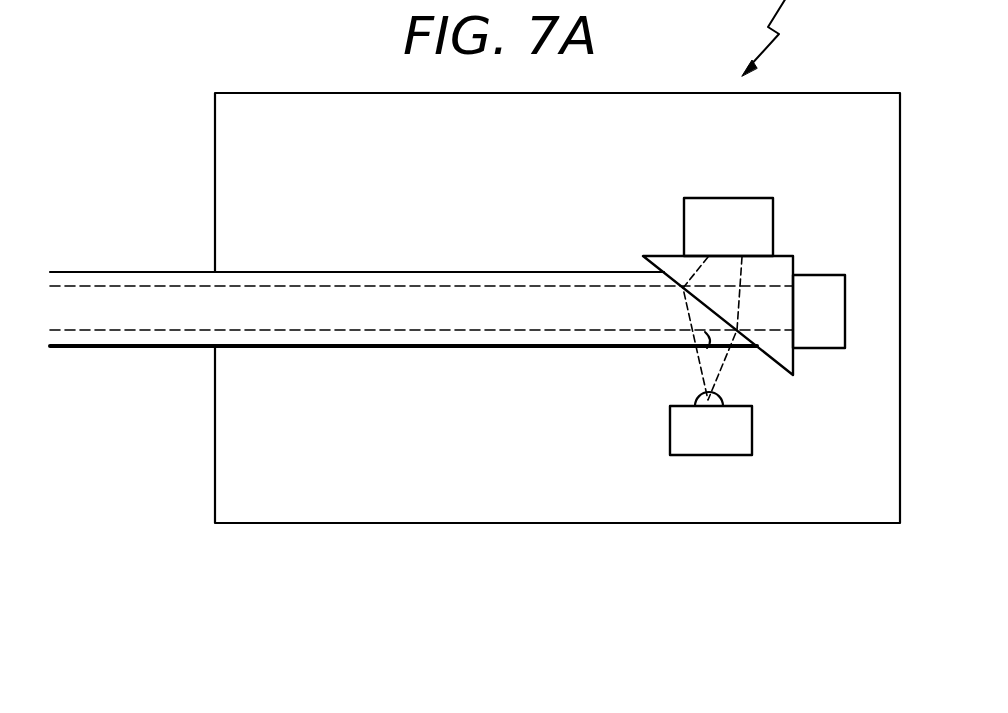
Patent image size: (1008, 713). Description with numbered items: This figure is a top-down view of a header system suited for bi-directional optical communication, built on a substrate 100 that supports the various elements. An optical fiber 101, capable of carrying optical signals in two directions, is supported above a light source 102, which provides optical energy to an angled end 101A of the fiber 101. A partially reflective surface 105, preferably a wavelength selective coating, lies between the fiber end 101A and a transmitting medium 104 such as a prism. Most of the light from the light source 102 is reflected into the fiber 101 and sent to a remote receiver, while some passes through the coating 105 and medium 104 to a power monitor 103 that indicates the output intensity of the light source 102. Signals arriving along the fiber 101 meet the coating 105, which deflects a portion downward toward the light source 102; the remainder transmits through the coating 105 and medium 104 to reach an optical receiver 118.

The substrate 100 is at (878, 516).
The optical fiber 101 is at (375, 322).
The angled end 101A is at (705, 348).
The light source 102 is at (728, 438).
The power monitor 103 is at (743, 240).
The transmitting medium 104 is at (773, 273).
The partially reflective surface 105 is at (700, 305).
The optical receiver 118 is at (835, 311).